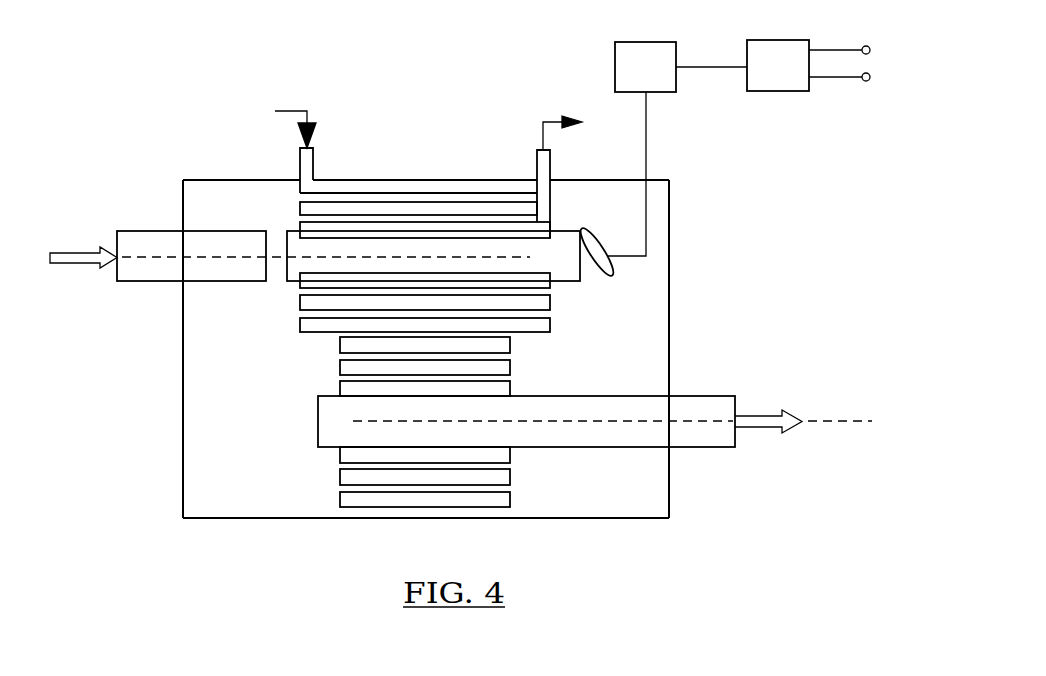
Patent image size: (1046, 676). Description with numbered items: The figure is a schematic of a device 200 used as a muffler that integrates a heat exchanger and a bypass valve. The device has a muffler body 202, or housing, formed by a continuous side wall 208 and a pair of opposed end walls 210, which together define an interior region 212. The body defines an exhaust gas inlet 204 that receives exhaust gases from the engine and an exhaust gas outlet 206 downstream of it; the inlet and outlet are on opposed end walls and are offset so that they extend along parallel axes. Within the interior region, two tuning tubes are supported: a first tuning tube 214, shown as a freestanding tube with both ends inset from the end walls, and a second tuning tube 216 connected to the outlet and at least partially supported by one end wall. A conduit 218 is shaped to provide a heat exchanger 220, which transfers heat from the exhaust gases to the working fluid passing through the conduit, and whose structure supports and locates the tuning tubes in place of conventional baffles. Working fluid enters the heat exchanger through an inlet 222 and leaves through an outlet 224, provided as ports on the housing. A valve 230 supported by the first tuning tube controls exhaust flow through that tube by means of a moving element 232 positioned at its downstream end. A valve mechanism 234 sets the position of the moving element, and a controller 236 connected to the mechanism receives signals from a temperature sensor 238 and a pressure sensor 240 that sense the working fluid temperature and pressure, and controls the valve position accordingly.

The device 200 is at (118, 488).
The muffler body 202 is at (645, 518).
The exhaust gas inlet 204 is at (148, 230).
The exhaust gas outlet 206 is at (703, 448).
The continuous side wall 208 is at (631, 518).
The end walls 210 is at (183, 398).
The interior region 212 is at (245, 408).
The first tuning tube 214 is at (293, 277).
The second tuning tube 216 is at (548, 449).
The conduit 218 is at (404, 210).
The heat exchanger 220 is at (425, 219).
The inlet 222 is at (300, 165).
The outlet 224 is at (536, 167).
The valve 230 is at (703, 150).
The moving element 232 is at (612, 272).
The valve mechanism 234 is at (662, 82).
The controller 236 is at (795, 81).
The temperature sensor 238 is at (861, 45).
The pressure sensor 240 is at (861, 82).